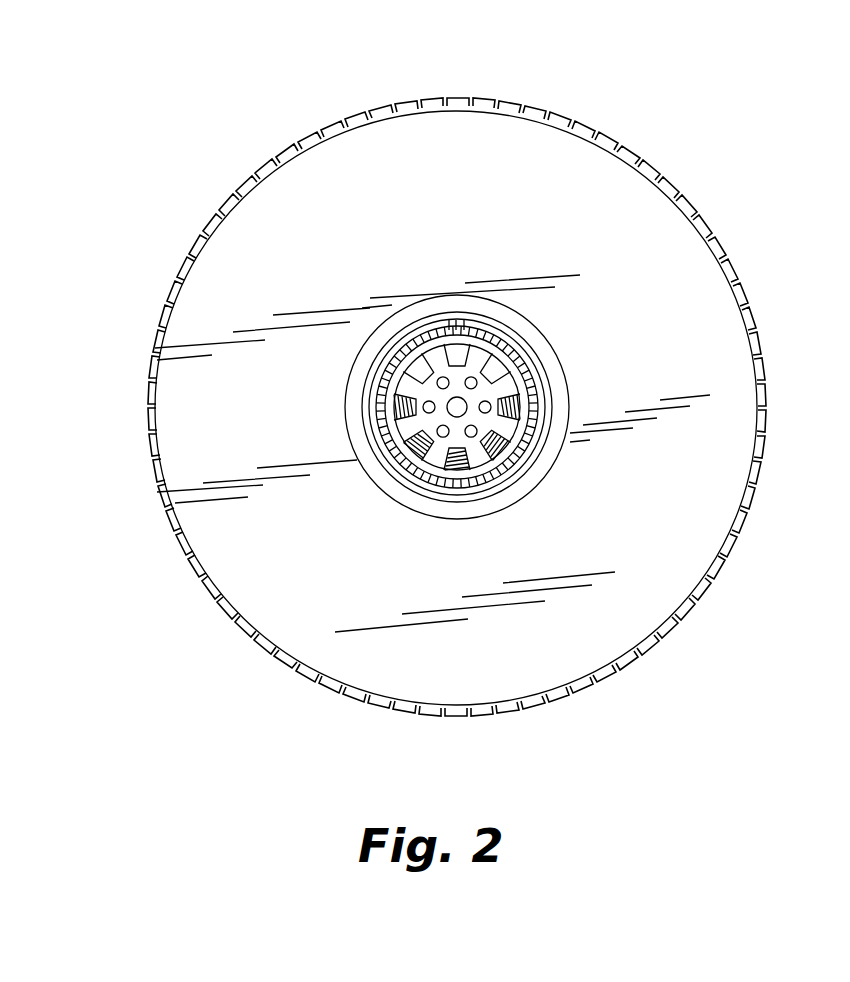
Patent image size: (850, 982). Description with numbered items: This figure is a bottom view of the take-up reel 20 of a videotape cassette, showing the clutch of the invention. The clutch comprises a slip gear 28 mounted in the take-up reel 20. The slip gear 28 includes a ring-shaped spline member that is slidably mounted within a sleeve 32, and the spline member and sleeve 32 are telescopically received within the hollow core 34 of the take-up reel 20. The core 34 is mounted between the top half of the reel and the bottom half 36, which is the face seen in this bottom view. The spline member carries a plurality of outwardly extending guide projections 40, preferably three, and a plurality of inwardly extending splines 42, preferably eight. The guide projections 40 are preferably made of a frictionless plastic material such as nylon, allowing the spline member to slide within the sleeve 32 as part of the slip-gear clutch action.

The take-up reel 20 is at (702, 115).
The slip gear 28 is at (473, 400).
The sleeve 32 is at (408, 492).
The hollow core 34 is at (543, 345).
The bottom half 36 is at (715, 327).
The guide projections 40 is at (453, 328).
The splines 42 is at (488, 363).